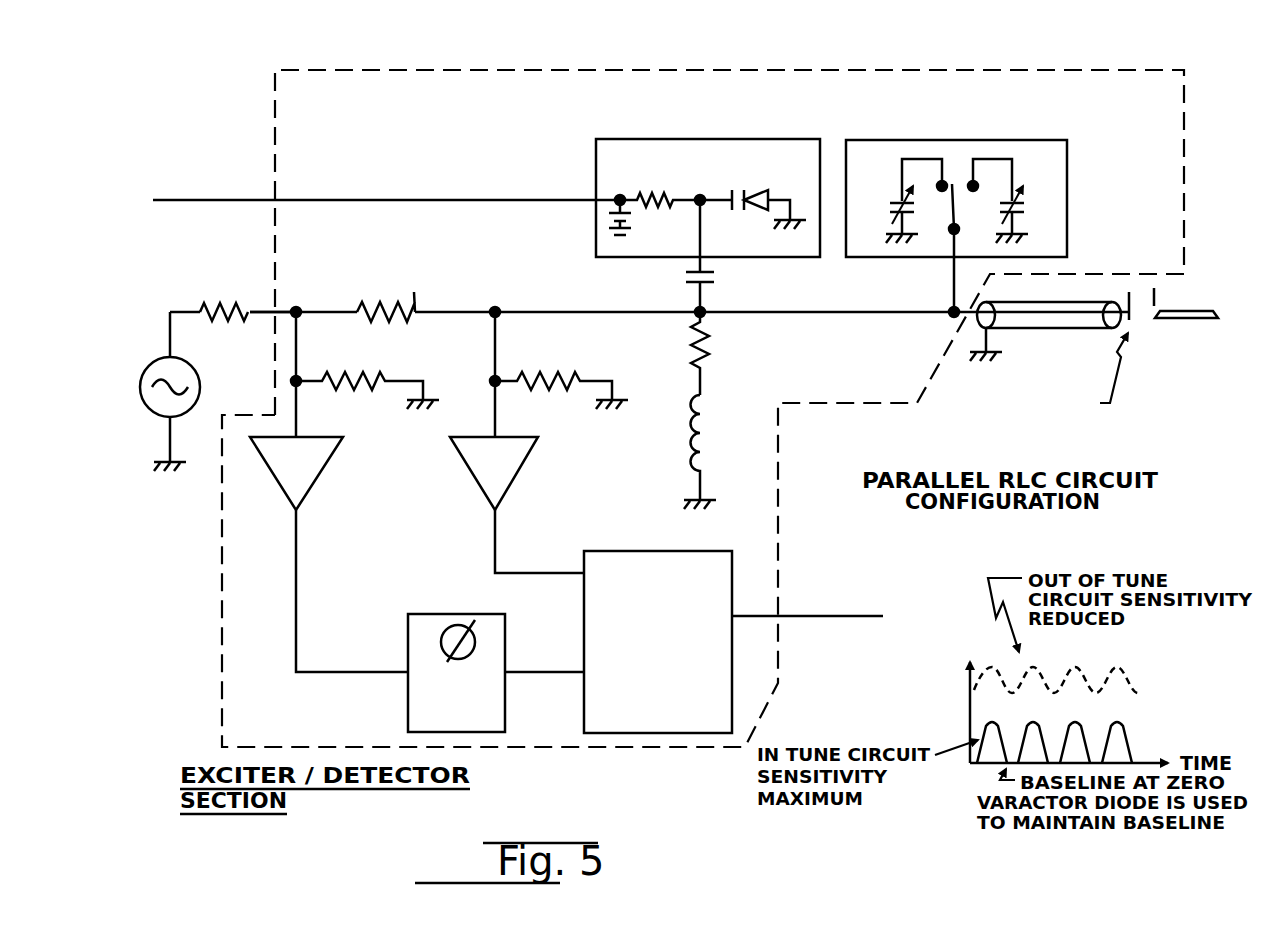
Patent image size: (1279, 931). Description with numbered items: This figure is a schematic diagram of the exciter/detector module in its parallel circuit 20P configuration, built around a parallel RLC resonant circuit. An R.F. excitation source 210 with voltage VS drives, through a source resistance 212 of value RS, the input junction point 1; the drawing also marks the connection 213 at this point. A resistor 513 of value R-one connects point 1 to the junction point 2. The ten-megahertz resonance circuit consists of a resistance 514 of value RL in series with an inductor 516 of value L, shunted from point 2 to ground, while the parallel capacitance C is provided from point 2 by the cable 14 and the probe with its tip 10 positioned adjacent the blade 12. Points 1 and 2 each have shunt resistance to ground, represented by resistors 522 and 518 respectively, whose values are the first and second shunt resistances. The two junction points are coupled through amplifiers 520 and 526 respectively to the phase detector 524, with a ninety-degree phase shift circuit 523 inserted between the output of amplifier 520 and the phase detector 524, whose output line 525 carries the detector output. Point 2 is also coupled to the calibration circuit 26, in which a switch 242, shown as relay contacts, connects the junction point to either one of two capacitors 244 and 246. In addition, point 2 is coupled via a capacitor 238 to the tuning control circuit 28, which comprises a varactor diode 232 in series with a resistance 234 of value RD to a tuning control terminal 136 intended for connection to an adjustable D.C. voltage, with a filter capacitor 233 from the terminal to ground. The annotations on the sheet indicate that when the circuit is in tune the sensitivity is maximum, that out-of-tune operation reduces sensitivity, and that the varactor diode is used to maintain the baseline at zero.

The parallel circuit 20P is at (512, 68).
The tuning control terminal 136 is at (208, 199).
The tuning control circuit 28 is at (596, 172).
The resistance 234 is at (674, 192).
The varactor diode 232 is at (740, 186).
The filter capacitor 233 is at (637, 220).
The capacitor 238 is at (716, 279).
The calibration circuit 26 is at (1068, 172).
The capacitor 244 is at (888, 210).
The capacitor 246 is at (1025, 210).
The switch 242 is at (950, 210).
The resistance 212 is at (218, 301).
The junction 213 is at (264, 318).
The R.F. excitation source 210 is at (143, 370).
The input junction point 1 is at (297, 311).
The junction point 2 is at (696, 316).
The resistor 513 is at (398, 306).
The resistor 522 is at (386, 377).
The resistor 518 is at (574, 377).
The amplifier 520 is at (312, 470).
The amplifier 526 is at (510, 470).
The resistance 514 is at (710, 364).
The inductor 516 is at (688, 440).
The phase detector 524 is at (650, 551).
The 90° phase shift circuit 523 is at (455, 612).
The output line 525 is at (812, 616).
The probe tip 10 is at (1137, 306).
The blade 12 is at (1207, 310).
The cable 14 is at (1030, 330).